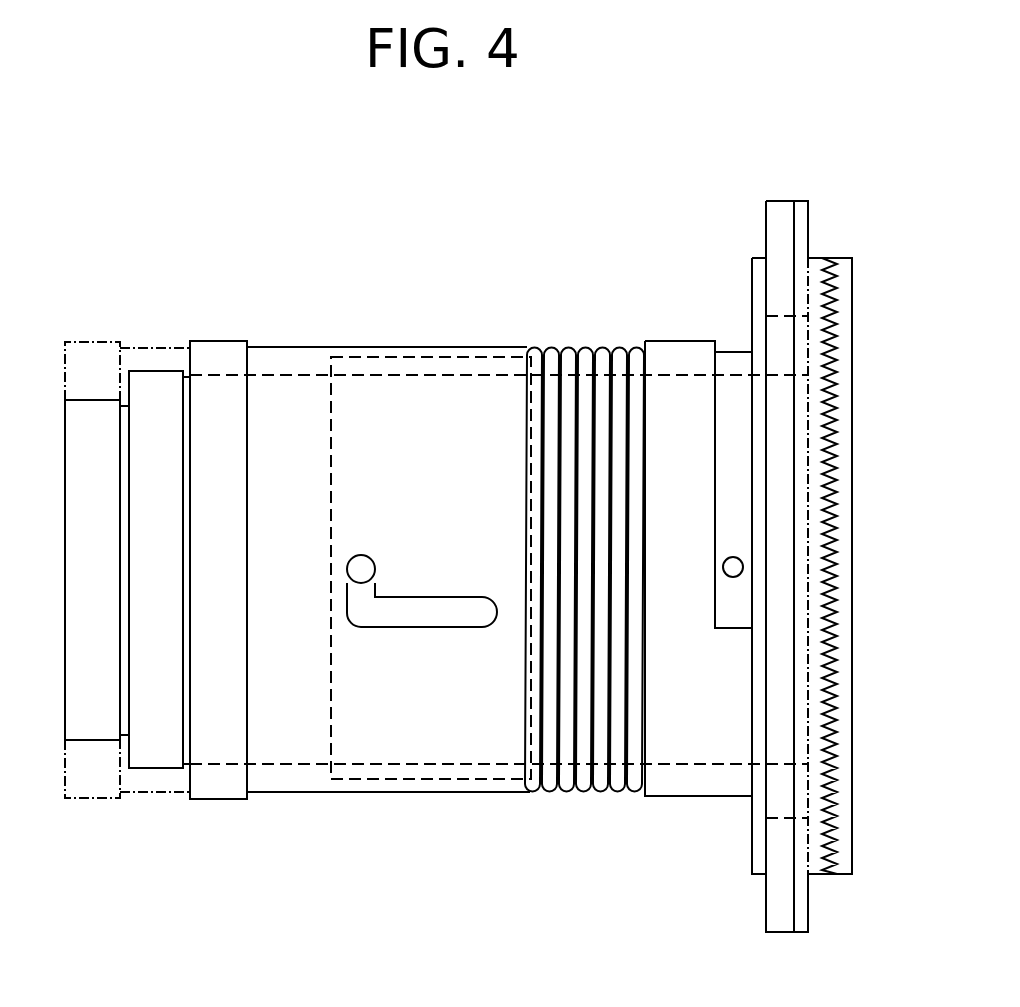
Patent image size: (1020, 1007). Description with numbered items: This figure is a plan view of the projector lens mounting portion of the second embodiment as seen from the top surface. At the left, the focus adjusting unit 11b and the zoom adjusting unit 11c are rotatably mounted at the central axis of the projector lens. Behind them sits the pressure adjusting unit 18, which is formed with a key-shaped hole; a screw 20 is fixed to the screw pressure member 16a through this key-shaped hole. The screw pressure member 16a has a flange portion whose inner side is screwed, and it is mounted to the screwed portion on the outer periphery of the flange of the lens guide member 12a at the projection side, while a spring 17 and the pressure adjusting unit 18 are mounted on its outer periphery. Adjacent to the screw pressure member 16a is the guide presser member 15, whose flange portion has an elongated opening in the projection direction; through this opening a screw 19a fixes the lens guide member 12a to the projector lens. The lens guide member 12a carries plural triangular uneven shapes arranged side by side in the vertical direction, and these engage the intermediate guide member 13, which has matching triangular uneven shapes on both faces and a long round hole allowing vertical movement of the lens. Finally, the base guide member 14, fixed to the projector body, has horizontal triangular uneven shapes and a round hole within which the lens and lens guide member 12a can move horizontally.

The focus adjusting unit 11b is at (87, 408).
The zoom adjusting unit 11c is at (162, 385).
The pressure adjusting unit 18 is at (415, 387).
The screw 20 is at (361, 583).
The spring 17 is at (552, 347).
The screw pressure member 16a is at (670, 341).
The guide presser member 15 is at (732, 350).
The screw 19a is at (742, 560).
The lens guide member 12a is at (843, 382).
The intermediate guide member 13 is at (802, 306).
The base guide member 14 is at (775, 903).